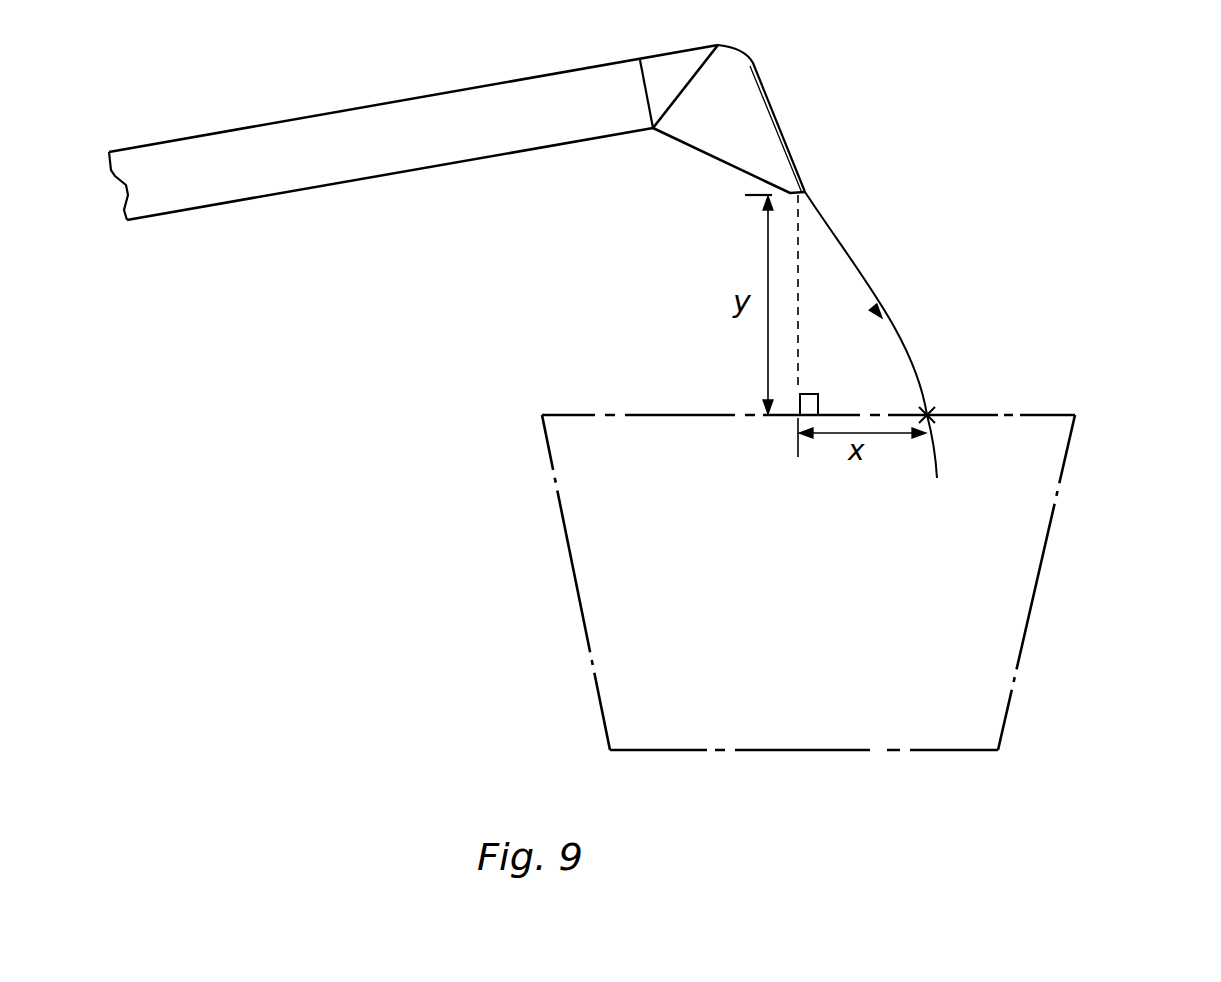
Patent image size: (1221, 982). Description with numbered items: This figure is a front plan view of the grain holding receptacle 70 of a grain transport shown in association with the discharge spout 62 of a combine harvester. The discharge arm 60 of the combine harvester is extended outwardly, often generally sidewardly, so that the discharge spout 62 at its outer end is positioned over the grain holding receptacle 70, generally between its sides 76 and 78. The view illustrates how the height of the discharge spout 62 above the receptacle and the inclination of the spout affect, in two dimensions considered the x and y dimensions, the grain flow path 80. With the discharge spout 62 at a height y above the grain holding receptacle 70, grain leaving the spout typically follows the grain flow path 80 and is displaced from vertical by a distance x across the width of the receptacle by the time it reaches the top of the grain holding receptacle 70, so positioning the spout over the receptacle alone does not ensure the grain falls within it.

The discharge arm 60 is at (360, 178).
The discharge spout 62 is at (745, 105).
The grain flow path 80 is at (852, 258).
The grain holding receptacle 70 is at (857, 712).
The side 76 is at (573, 592).
The side 78 is at (1043, 563).